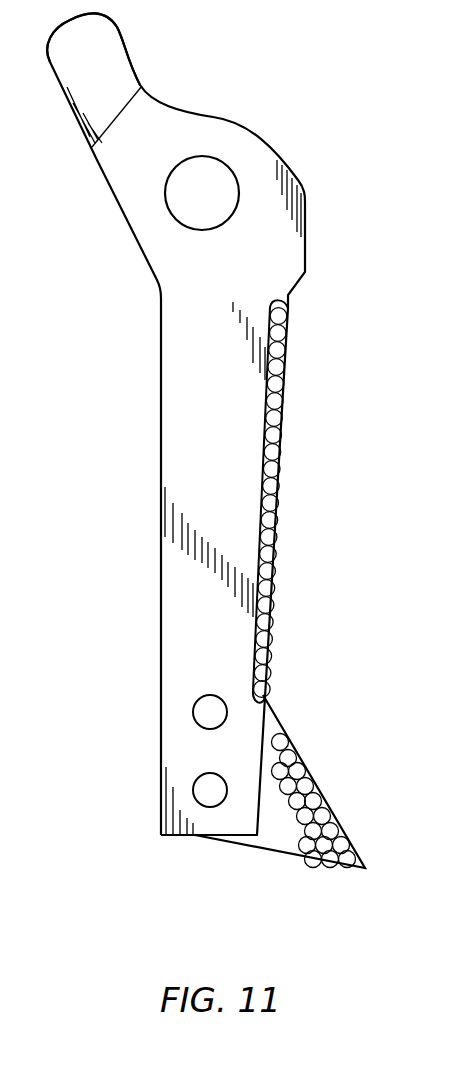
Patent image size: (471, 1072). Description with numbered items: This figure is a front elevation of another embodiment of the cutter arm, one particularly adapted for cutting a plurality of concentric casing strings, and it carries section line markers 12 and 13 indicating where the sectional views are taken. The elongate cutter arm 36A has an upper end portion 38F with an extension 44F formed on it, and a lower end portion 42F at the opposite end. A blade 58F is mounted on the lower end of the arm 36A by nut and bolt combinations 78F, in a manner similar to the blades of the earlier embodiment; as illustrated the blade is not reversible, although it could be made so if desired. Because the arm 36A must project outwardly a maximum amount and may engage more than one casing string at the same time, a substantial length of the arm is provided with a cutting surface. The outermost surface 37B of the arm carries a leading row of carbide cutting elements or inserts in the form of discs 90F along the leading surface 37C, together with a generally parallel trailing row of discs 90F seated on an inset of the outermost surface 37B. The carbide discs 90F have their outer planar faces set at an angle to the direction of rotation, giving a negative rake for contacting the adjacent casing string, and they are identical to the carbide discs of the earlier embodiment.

The cutter arm 36A is at (190, 602).
The extension 44F is at (112, 42).
The upper end portion 38F is at (290, 263).
The leading surface 37C is at (231, 470).
The outermost surface 37B is at (273, 558).
The carbide discs 90F is at (278, 364).
The blade 58F is at (275, 716).
The nut and bolt combinations 78F is at (208, 700).
The lower end portion 42F is at (192, 750).
The section line 12- 12 is at (90, 492).
The section line 13- 13 is at (93, 930).